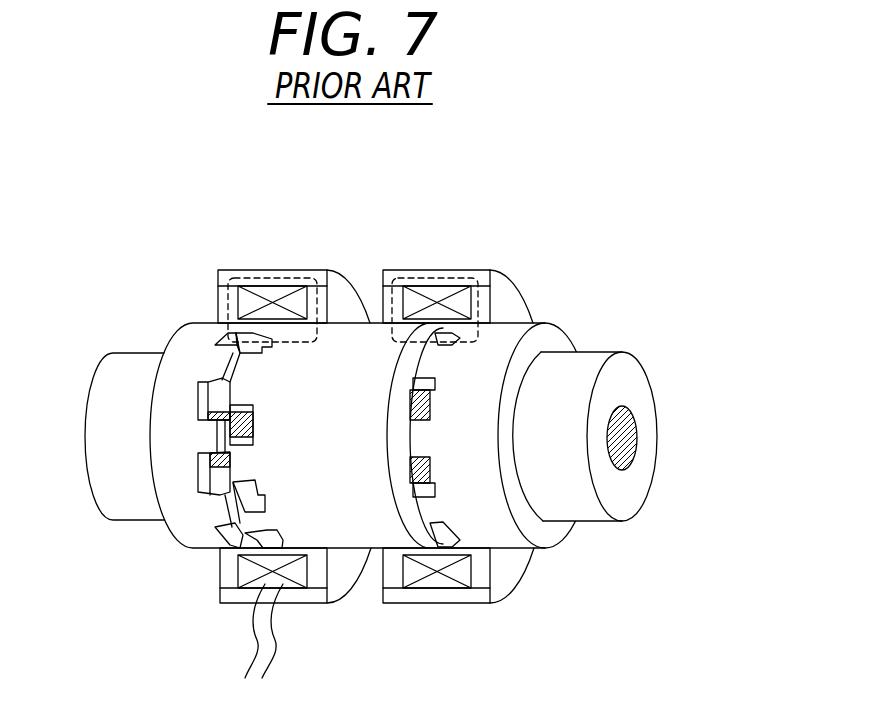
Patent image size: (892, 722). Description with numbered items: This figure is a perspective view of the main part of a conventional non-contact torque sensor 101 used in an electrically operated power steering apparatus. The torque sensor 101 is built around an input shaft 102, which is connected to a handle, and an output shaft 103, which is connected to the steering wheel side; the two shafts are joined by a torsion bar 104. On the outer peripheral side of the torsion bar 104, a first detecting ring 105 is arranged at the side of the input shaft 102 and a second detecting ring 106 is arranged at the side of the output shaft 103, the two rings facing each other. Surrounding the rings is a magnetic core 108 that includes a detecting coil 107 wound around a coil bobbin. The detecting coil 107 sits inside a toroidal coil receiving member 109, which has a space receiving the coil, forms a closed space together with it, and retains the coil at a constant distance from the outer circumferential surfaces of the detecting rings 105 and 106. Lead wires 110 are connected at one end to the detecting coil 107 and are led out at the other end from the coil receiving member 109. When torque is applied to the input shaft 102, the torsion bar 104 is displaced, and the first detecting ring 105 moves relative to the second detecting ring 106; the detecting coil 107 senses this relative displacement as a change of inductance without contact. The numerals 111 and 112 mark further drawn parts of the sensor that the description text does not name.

The torque sensor 101 is at (528, 237).
The input shaft 102 is at (593, 362).
The output shaft 103 is at (117, 372).
The torsion bar 104 is at (212, 370).
The first detecting ring 105 is at (345, 350).
The second detecting ring 106 is at (207, 333).
The detecting coil 107 is at (273, 293).
The magnetic core 108 is at (337, 254).
The coil receiving member 109 is at (255, 278).
The lead wires 110 is at (268, 643).
The lower yoke 111 is at (310, 602).
The lower yoke 112 is at (223, 568).